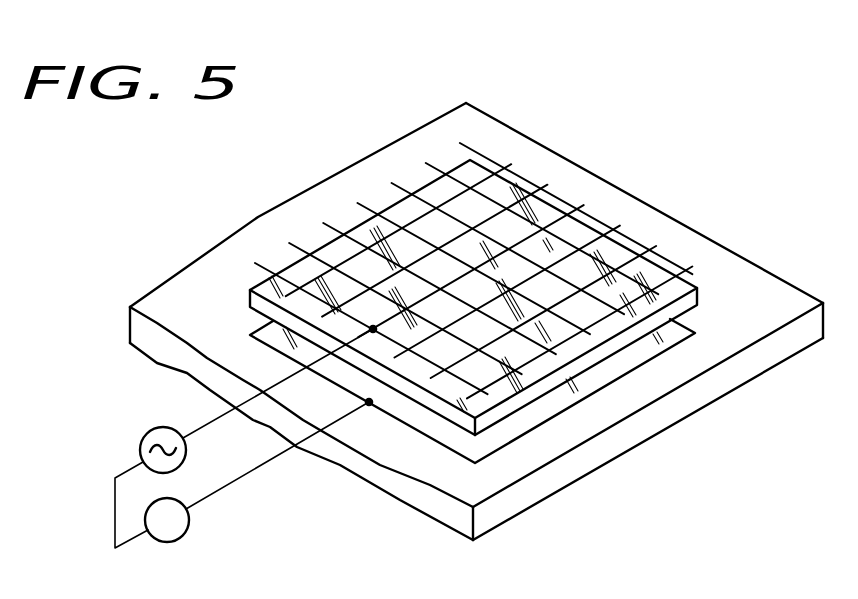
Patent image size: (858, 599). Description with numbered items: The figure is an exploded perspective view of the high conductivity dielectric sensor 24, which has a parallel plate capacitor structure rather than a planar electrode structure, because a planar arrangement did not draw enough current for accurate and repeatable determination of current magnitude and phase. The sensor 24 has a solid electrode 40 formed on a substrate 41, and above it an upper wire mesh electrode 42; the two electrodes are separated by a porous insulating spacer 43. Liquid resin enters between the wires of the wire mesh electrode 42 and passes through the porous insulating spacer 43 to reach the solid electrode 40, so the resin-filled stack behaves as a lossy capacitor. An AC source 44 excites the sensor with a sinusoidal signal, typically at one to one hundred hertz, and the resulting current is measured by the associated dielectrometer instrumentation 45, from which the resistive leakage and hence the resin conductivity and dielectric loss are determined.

The dielectric sensor 24 is at (302, 227).
The solid electrode 40 is at (610, 368).
The substrate 41 is at (543, 483).
The upper wire mesh electrode 42 is at (530, 180).
The porous insulating spacer 43 is at (683, 303).
The AC source 44 is at (150, 431).
The dielectrometer instrumentation 45 is at (187, 530).